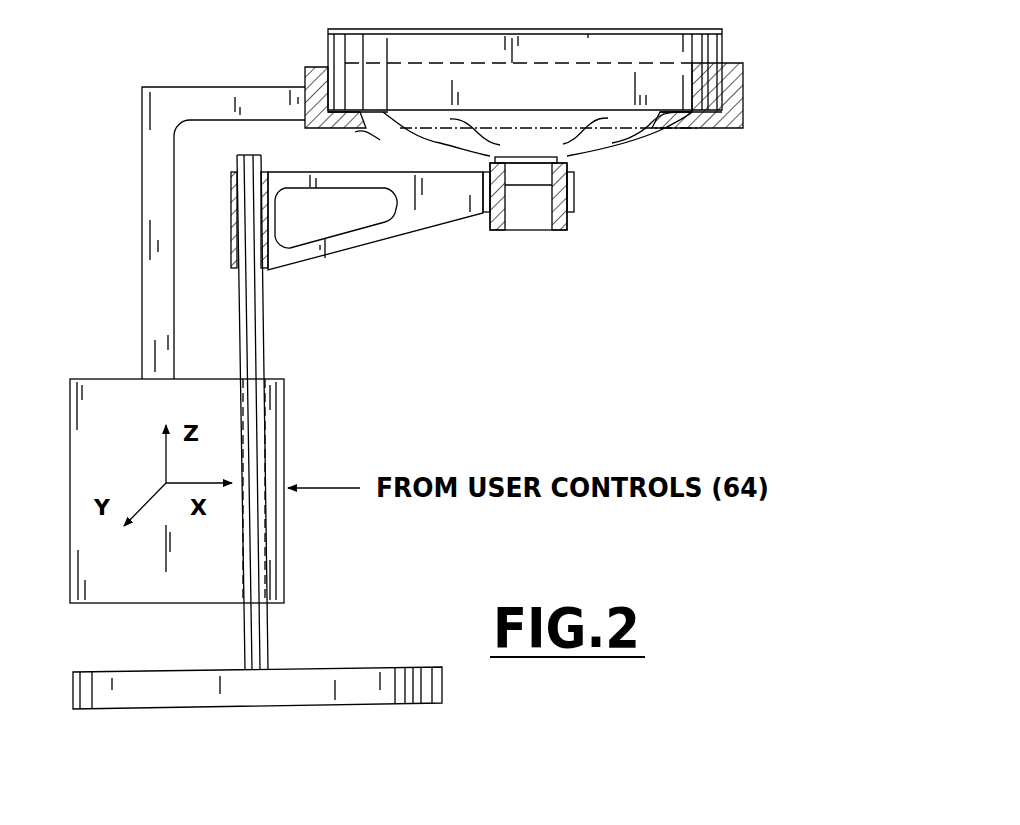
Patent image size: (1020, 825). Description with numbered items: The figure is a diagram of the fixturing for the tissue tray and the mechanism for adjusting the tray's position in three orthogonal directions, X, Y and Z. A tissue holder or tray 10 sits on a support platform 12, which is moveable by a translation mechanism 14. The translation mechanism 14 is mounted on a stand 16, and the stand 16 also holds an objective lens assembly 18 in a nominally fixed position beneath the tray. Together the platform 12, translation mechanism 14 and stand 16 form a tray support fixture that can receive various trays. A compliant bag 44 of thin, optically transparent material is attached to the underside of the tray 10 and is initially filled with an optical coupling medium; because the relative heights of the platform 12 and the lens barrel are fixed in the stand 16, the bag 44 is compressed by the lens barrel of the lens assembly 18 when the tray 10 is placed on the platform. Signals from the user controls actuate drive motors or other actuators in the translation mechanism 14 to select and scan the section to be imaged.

The tissue holder or tray 10 is at (720, 31).
The support platform 12 is at (573, 95).
The translation mechanism 14 is at (152, 320).
The stand 16 is at (264, 323).
The objective lens assembly 18 is at (574, 220).
The compliant bag 44 is at (610, 140).